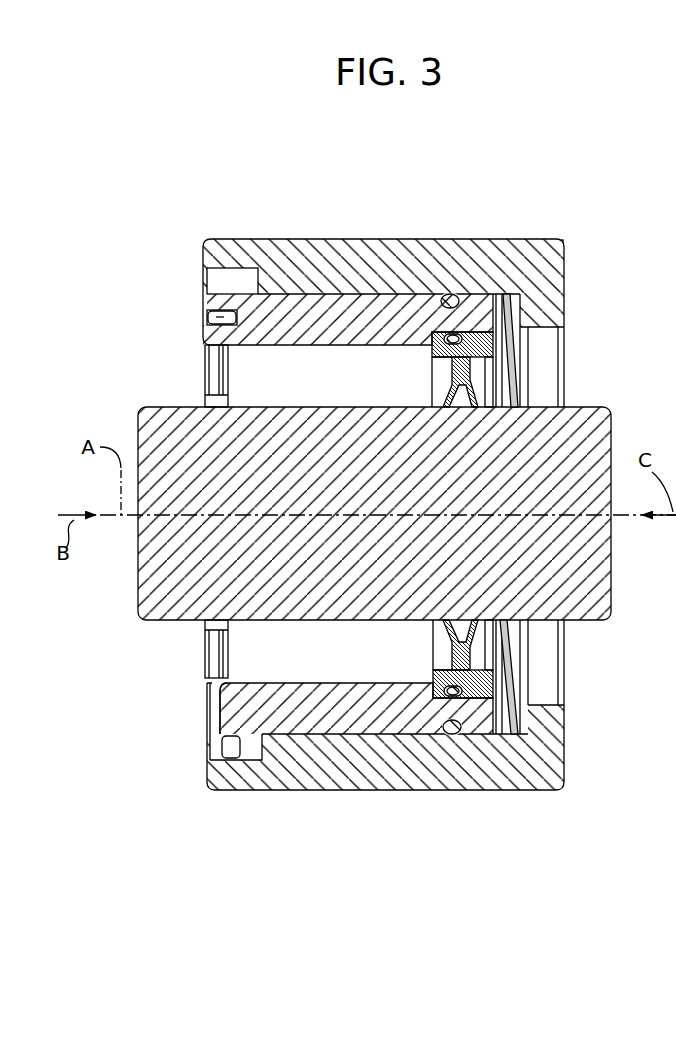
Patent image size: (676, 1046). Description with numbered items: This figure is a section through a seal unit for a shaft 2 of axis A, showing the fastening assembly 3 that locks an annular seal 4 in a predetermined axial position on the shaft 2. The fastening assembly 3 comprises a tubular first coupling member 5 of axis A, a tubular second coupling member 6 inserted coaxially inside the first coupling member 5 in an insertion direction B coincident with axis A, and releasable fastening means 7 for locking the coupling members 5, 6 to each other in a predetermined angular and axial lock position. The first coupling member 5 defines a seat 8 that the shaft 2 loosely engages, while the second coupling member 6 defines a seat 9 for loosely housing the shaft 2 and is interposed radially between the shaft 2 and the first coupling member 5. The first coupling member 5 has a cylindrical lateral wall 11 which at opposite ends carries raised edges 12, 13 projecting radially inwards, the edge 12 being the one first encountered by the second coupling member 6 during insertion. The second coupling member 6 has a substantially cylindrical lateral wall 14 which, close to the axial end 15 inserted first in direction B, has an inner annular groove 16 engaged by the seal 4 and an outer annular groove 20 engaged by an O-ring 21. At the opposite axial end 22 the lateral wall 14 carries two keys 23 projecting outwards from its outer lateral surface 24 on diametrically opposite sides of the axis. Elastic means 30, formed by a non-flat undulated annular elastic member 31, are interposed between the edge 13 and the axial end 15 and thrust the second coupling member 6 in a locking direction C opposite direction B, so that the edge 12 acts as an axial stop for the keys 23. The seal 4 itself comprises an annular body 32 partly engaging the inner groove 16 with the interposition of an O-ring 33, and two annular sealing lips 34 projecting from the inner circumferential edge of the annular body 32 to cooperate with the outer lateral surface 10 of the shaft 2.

The shaft 2 is at (584, 567).
The fastening assembly 3 is at (572, 251).
The annular seal 4 is at (507, 292).
The first coupling member 5 is at (306, 263).
The second coupling member 6 is at (343, 718).
The releasable fastening means 7 is at (191, 278).
The seat 8 is at (540, 362).
The seat 9 is at (262, 652).
The outer lateral surface 10 is at (170, 403).
The cylindrical lateral wall 11 is at (400, 256).
The raised edge 12 is at (214, 752).
The raised edge 13 is at (548, 722).
The lateral wall 14 is at (410, 719).
The axial end 15 is at (493, 733).
The inner annular groove 16 is at (433, 663).
The outer annular groove 20 is at (460, 744).
The O-ring 21 is at (455, 333).
The axial end 22 is at (238, 711).
The key 23 is at (221, 299).
The outer lateral surface 24 is at (311, 739).
The elastic means 30 is at (519, 298).
The undulated annular elastic member 31 is at (513, 383).
The annular body 32 is at (452, 365).
The O-ring 33 is at (472, 330).
The annular sealing lip 34 is at (469, 634).